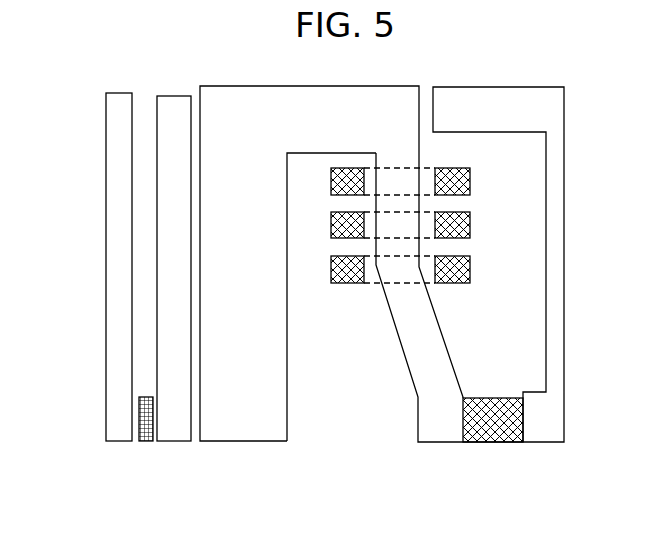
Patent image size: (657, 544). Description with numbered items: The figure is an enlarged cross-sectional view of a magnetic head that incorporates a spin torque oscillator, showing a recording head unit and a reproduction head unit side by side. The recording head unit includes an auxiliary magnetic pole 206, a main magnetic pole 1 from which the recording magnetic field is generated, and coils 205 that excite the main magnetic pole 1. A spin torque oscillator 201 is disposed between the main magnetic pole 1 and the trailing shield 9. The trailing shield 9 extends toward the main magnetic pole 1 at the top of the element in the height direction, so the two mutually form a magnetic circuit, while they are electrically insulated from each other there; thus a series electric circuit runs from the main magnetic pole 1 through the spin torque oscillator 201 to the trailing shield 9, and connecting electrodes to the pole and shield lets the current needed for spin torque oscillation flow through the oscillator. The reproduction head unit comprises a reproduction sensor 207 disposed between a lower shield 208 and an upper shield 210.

The main magnetic pole 1 is at (418, 442).
The trailing shield 9 is at (564, 362).
The spin torque oscillator 201 is at (467, 450).
The coils 205 is at (343, 285).
The auxiliary magnetic pole 206 is at (272, 450).
The reproduction sensor 207 is at (146, 443).
The lower shield 208 is at (112, 310).
The upper shield 210 is at (177, 445).